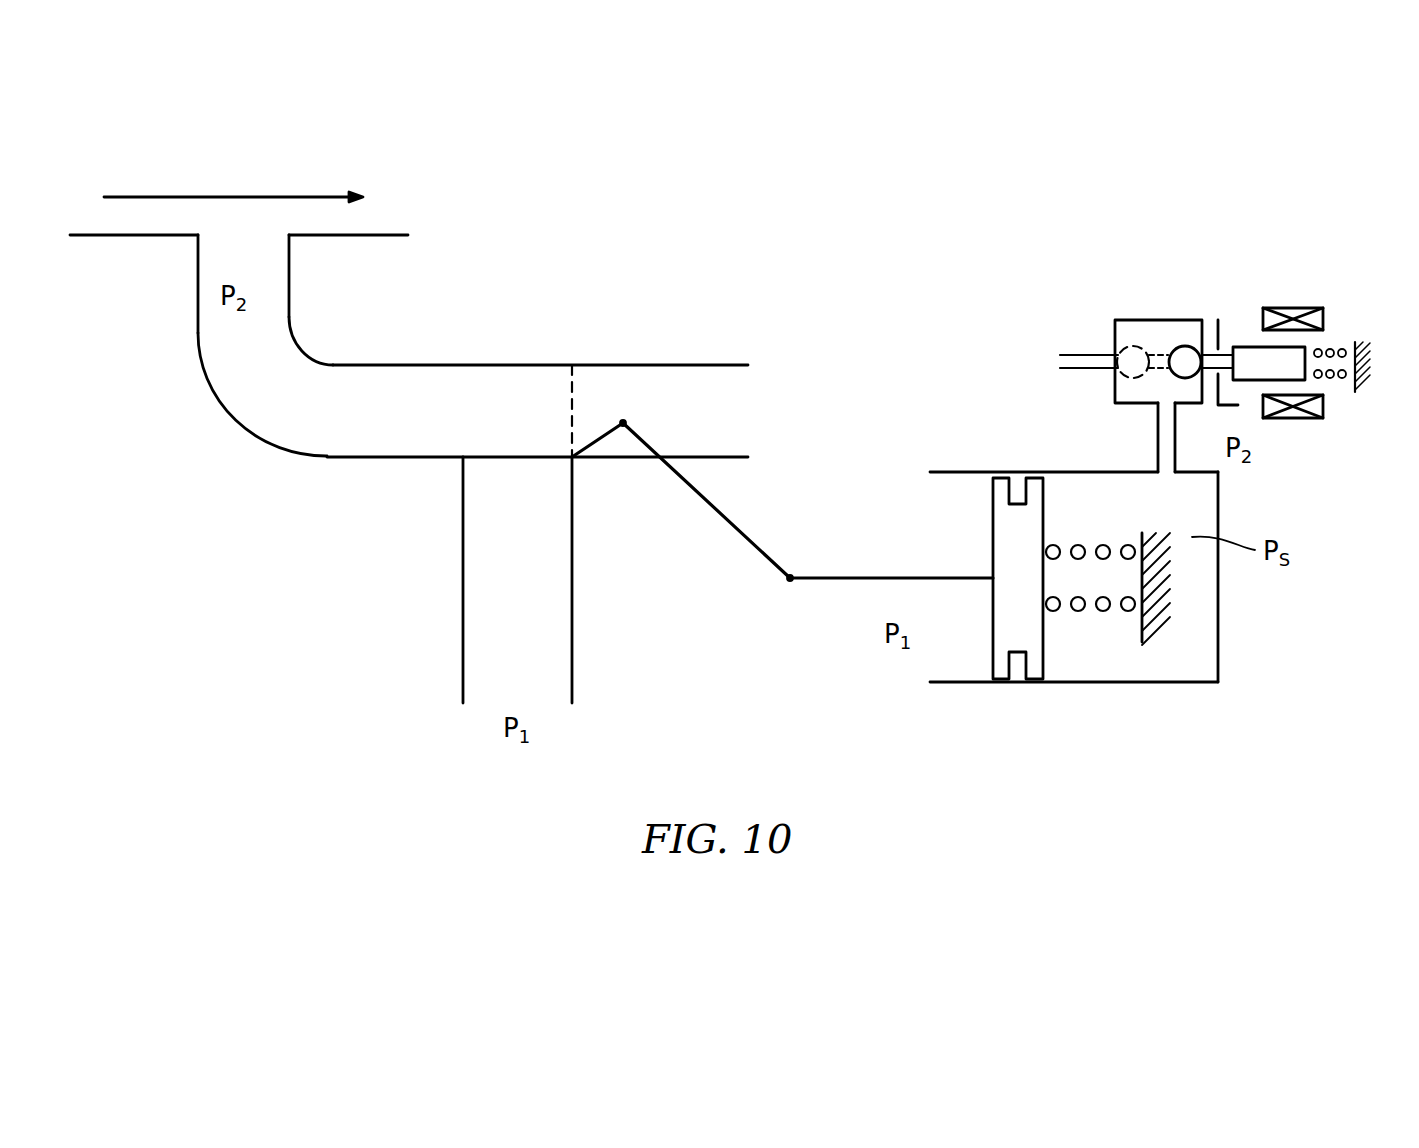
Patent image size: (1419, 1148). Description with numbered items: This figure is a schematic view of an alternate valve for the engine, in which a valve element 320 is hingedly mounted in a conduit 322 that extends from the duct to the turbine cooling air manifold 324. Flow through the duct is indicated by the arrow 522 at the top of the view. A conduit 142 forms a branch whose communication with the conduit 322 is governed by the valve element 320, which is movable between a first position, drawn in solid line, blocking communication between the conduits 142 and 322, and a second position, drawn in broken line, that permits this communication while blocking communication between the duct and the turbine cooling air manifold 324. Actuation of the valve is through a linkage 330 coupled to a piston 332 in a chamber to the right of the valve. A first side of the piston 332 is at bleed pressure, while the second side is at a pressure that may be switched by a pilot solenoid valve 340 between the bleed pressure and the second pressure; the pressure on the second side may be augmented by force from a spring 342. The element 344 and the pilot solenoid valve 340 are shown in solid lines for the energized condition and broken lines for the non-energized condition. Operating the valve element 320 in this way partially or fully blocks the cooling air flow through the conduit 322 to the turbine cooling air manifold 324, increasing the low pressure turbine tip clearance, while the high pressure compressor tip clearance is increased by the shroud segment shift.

The flow direction arrow 522 is at (143, 197).
The valve element 320 is at (535, 455).
The conduit 322 is at (333, 365).
The conduit 142 is at (572, 590).
The linkage 330 is at (734, 479).
The turbine cooling air manifold 324 is at (842, 418).
The piston 332 is at (1013, 615).
The spring 342 is at (1104, 614).
The element 344 is at (1185, 357).
The pilot solenoid valve 340 is at (1300, 280).